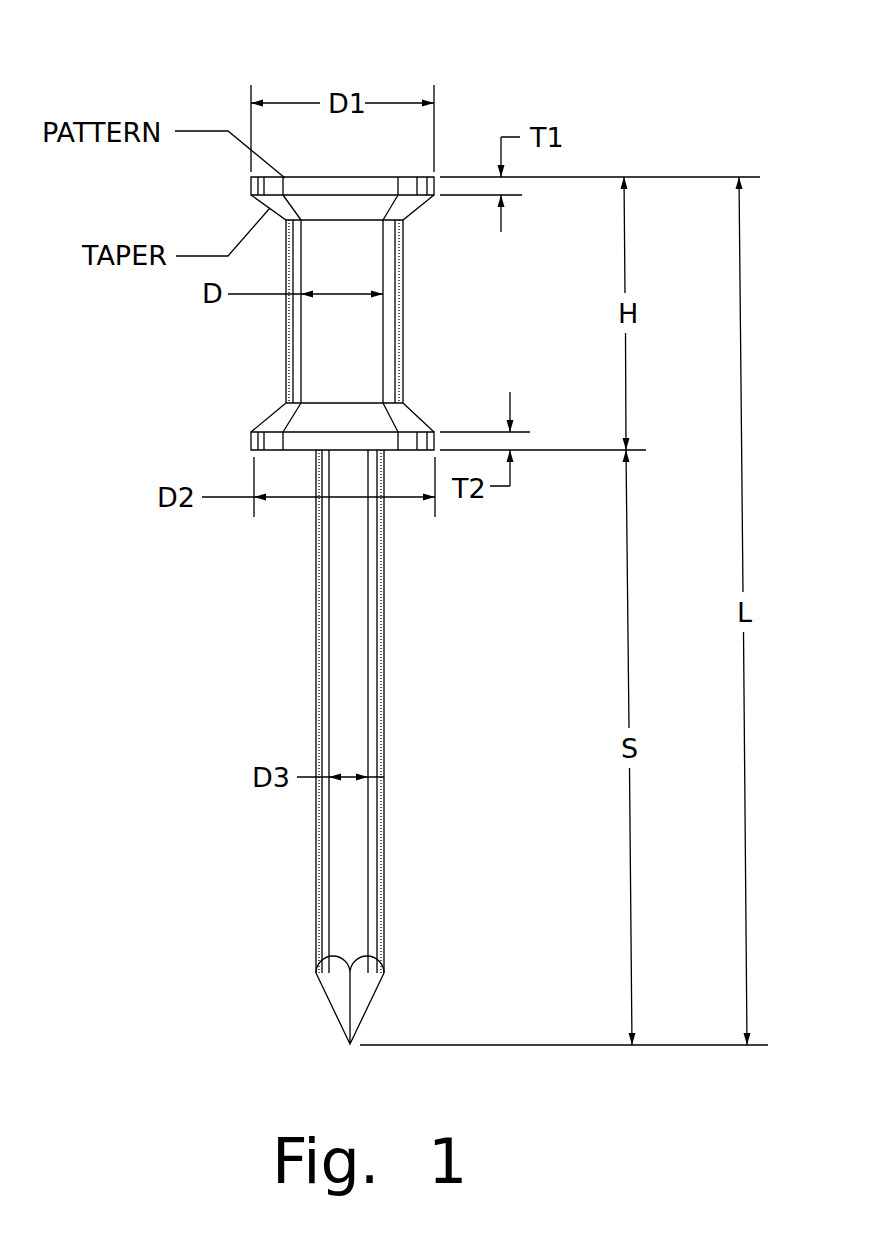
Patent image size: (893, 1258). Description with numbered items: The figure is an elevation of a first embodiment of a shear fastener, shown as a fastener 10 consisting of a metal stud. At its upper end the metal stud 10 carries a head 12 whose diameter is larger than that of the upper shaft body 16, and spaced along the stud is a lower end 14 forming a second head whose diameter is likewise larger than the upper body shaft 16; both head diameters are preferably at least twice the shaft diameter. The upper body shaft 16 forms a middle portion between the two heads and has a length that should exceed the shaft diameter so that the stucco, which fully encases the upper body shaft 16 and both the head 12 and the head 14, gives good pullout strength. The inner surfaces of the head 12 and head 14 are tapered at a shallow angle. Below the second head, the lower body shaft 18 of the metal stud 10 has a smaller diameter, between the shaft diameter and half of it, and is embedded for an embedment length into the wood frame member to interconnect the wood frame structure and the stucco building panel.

The fastener 10 is at (466, 139).
The head 12 is at (253, 188).
The lower end 14 is at (253, 441).
The upper shaft body 16 is at (300, 322).
The lower body shaft 18 is at (340, 658).